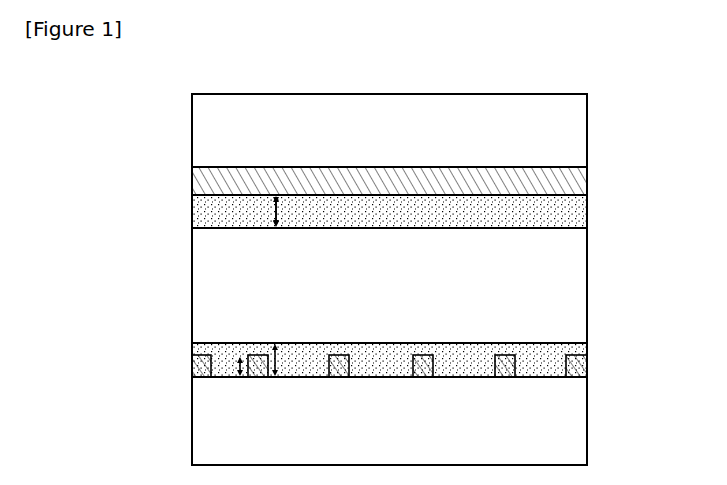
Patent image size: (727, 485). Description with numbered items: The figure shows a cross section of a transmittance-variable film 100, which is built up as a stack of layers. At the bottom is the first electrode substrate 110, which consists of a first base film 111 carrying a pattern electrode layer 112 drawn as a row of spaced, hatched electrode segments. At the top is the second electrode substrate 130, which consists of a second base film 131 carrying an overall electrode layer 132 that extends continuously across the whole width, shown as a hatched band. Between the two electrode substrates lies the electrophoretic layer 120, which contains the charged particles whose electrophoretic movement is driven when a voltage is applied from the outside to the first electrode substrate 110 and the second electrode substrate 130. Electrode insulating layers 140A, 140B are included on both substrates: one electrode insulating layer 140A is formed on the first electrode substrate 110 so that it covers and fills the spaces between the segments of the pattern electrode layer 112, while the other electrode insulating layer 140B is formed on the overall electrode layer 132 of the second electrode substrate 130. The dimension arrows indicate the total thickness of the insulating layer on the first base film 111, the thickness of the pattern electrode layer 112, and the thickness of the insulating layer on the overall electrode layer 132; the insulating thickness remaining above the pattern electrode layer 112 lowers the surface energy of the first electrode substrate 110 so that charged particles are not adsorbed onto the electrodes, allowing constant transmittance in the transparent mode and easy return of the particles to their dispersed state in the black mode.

The transmittance-variable film 100 is at (78, 143).
The first electrode substrate 110 is at (131, 357).
The first base film 111 is at (206, 425).
The pattern electrode layer 112 is at (201, 362).
The electrophoretic layer 120 is at (206, 284).
The second electrode substrate 130 is at (131, 113).
The second base film 131 is at (206, 121).
The overall electrode layer 132 is at (206, 177).
The electrode insulating layer 140A is at (572, 351).
The electrode insulating layer 140B is at (206, 212).